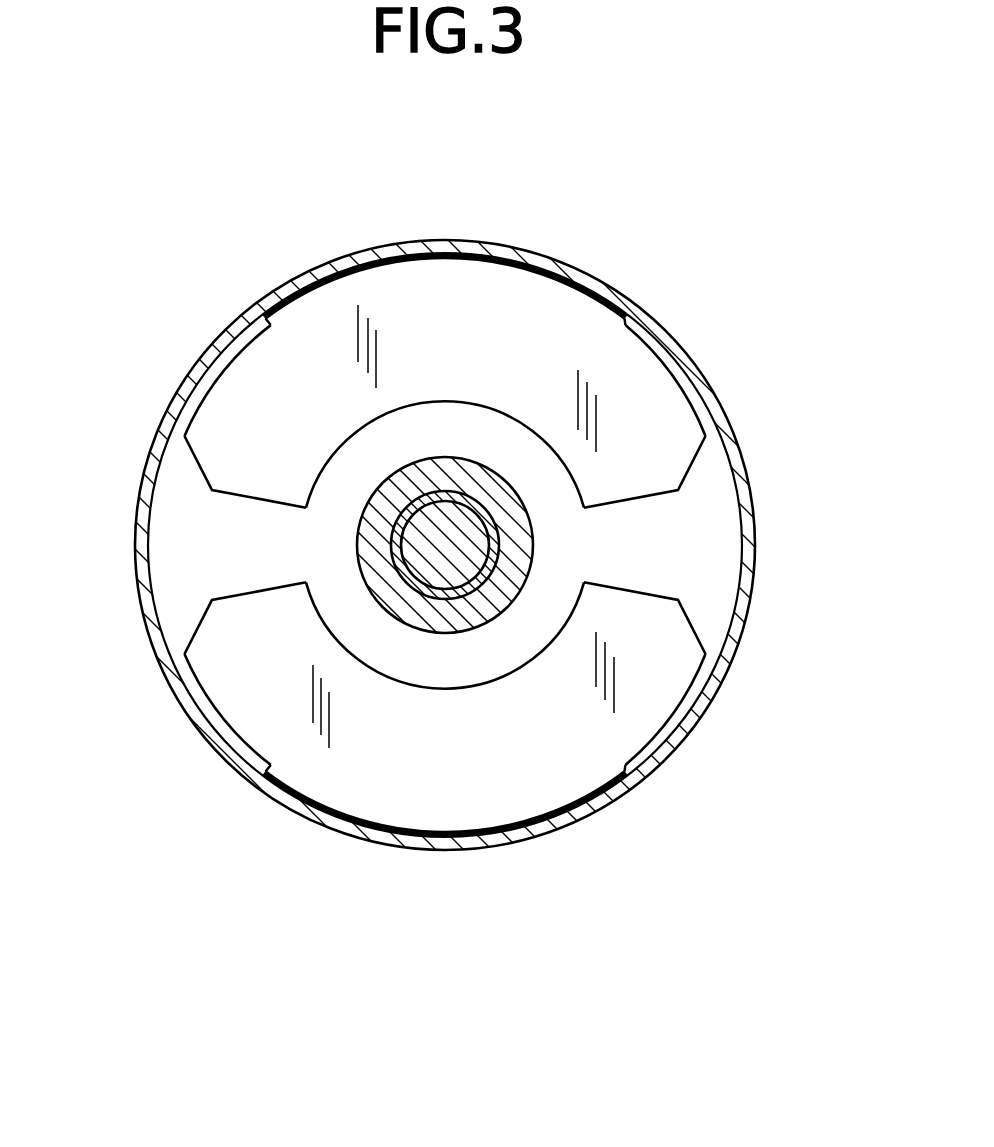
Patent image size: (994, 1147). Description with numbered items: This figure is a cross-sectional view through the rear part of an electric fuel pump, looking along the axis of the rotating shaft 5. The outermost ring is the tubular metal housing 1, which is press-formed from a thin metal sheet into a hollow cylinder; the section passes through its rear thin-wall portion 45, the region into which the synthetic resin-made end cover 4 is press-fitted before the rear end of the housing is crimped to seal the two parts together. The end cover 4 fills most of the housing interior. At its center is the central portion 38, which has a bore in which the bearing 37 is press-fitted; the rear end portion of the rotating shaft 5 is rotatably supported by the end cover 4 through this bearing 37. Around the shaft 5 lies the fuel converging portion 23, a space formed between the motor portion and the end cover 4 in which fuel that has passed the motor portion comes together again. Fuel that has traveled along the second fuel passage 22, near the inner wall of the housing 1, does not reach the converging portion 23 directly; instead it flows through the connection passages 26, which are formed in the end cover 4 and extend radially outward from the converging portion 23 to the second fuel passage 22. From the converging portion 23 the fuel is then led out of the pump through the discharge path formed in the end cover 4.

The housing 1 is at (753, 482).
The thin-wall portion 45 is at (462, 546).
The second fuel passage 22 is at (243, 322).
The end cover 4 is at (445, 535).
The fuel converging portion 23 is at (347, 478).
The connection passages 26 is at (240, 556).
The central portion 38 is at (510, 590).
The bearing 37 is at (472, 585).
The rotating shaft 5 is at (437, 547).